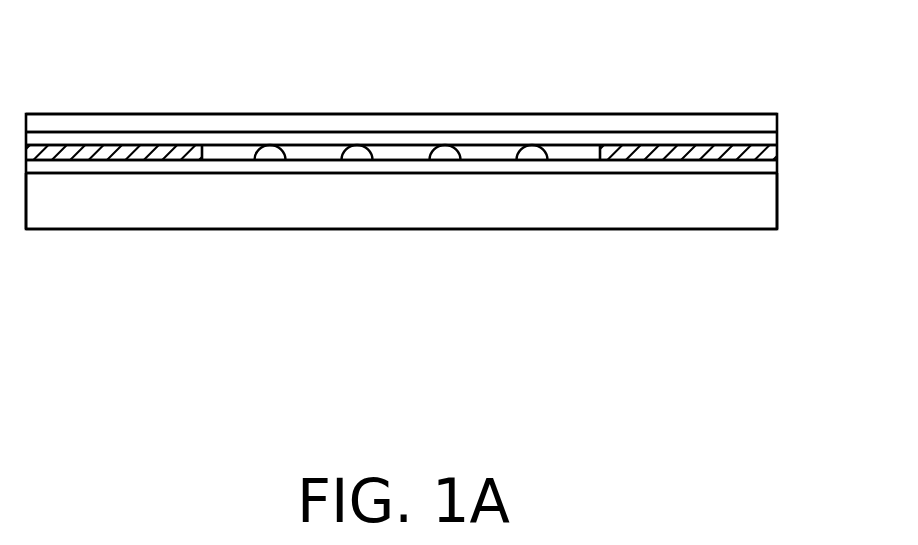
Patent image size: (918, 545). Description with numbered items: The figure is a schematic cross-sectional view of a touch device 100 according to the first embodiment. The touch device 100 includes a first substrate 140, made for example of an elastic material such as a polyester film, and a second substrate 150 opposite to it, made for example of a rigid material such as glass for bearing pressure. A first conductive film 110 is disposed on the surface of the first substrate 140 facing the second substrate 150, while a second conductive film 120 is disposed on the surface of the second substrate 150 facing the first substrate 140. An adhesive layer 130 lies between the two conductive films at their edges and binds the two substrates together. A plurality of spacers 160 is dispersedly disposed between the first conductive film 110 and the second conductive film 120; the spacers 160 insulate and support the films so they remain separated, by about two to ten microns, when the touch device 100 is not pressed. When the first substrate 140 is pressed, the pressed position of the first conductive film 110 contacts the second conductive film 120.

The touch device 100 is at (853, 315).
The first conductive film 110 is at (770, 138).
The second conductive film 120 is at (768, 168).
The adhesive layer 130 is at (768, 150).
The first substrate 140 is at (735, 122).
The second substrate 150 is at (767, 200).
The spacers 160 is at (357, 155).